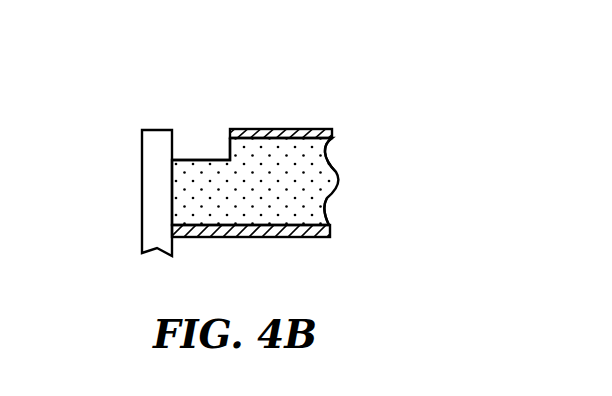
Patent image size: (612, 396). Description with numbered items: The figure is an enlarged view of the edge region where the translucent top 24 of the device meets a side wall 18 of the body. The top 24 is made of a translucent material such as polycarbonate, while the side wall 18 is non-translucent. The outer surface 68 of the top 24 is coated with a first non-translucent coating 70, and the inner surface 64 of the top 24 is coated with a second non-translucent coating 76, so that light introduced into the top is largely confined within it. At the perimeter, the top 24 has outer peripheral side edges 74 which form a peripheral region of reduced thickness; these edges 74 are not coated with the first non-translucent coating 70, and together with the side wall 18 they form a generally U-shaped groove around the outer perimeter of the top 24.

The side wall 18 is at (153, 193).
The top 24 is at (328, 208).
The inner surface 64 is at (330, 217).
The outer surface 68 is at (325, 153).
The first non-translucent coating 70 is at (332, 135).
The outer peripheral side edges 74 is at (205, 140).
The second non-translucent coating 76 is at (275, 237).